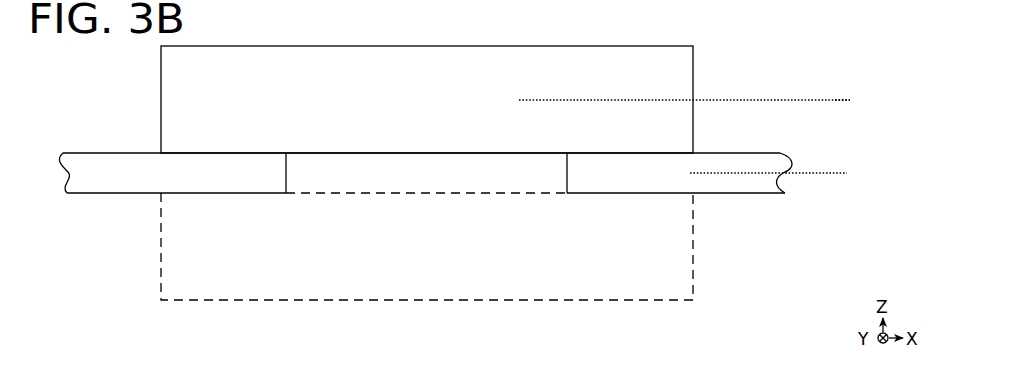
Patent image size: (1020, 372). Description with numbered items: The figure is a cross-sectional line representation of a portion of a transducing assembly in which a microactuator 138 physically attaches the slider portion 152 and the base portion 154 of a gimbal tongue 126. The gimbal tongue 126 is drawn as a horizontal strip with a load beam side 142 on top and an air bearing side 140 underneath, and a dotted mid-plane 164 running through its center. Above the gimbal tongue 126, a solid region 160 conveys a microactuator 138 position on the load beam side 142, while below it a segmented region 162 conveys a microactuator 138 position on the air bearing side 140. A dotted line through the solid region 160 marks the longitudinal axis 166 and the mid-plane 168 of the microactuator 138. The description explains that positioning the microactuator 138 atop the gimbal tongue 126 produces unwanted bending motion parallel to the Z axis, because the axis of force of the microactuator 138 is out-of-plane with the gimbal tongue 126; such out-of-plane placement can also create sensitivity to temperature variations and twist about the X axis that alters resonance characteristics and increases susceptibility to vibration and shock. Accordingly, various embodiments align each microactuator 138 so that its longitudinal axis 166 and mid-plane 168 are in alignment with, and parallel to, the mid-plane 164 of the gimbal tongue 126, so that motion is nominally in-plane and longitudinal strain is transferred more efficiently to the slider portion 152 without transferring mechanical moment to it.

The gimbal tongue 126 is at (420, 200).
The microactuator 138 is at (442, 168).
The air bearing side 140 is at (466, 184).
The load beam side 142 is at (776, 152).
The slider portion 152 is at (611, 182).
The base portion 154 is at (117, 182).
The solid region 160 is at (203, 74).
The segmented region 162 is at (203, 294).
The mid-plane 164 is at (847, 174).
The longitudinal axis 166 is at (728, 99).
The mid-plane 168 is at (842, 99).